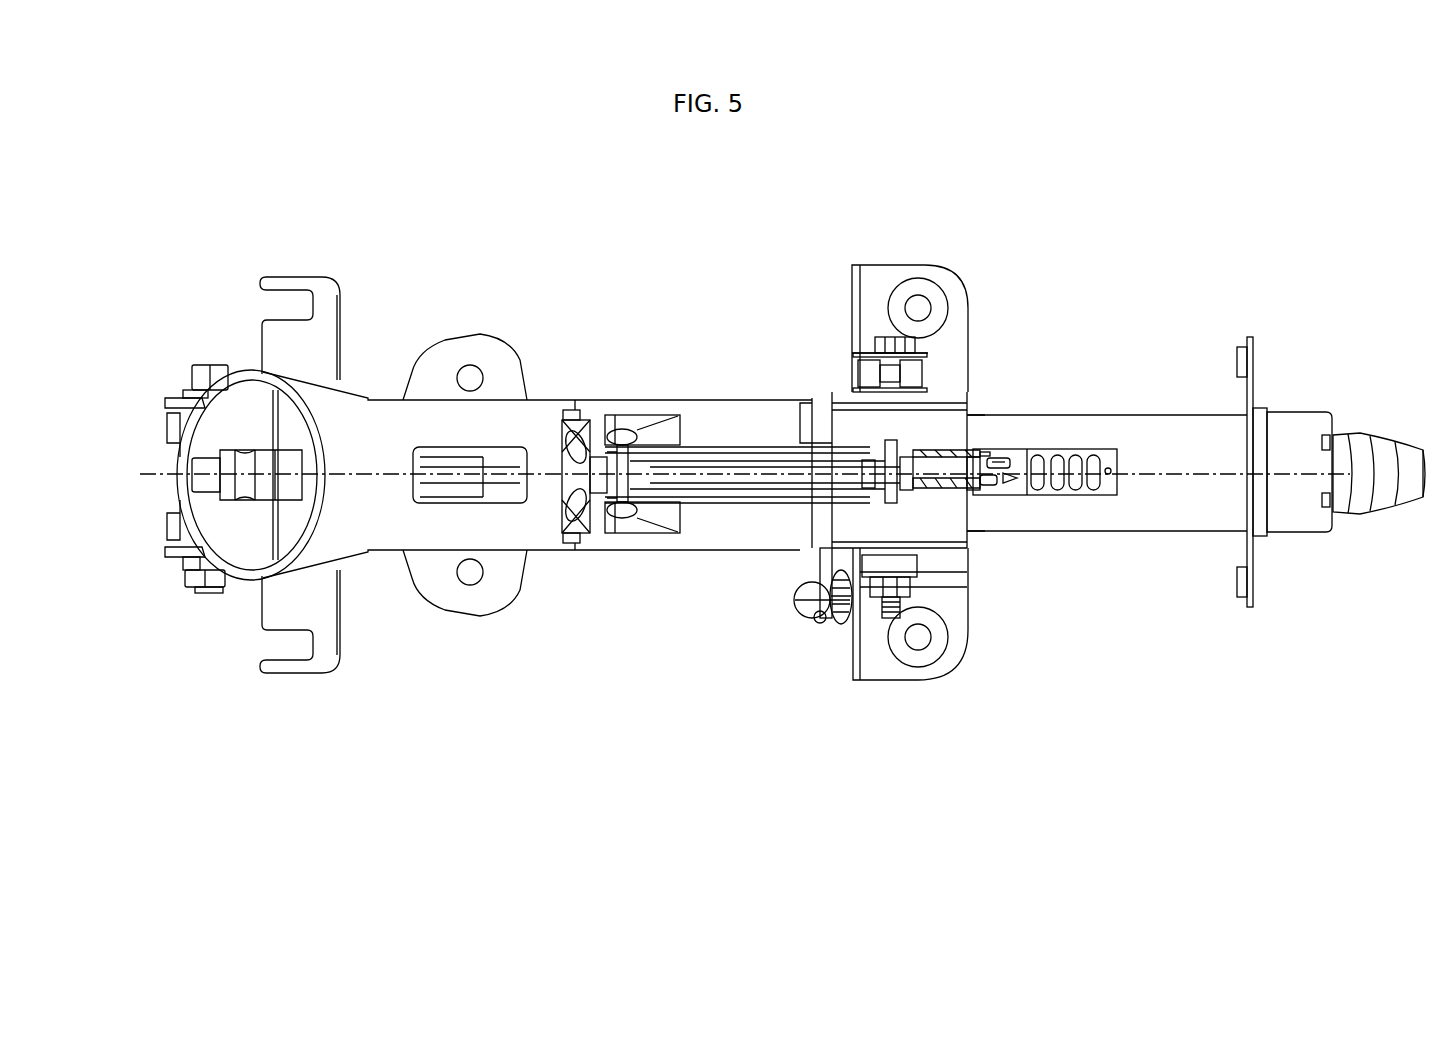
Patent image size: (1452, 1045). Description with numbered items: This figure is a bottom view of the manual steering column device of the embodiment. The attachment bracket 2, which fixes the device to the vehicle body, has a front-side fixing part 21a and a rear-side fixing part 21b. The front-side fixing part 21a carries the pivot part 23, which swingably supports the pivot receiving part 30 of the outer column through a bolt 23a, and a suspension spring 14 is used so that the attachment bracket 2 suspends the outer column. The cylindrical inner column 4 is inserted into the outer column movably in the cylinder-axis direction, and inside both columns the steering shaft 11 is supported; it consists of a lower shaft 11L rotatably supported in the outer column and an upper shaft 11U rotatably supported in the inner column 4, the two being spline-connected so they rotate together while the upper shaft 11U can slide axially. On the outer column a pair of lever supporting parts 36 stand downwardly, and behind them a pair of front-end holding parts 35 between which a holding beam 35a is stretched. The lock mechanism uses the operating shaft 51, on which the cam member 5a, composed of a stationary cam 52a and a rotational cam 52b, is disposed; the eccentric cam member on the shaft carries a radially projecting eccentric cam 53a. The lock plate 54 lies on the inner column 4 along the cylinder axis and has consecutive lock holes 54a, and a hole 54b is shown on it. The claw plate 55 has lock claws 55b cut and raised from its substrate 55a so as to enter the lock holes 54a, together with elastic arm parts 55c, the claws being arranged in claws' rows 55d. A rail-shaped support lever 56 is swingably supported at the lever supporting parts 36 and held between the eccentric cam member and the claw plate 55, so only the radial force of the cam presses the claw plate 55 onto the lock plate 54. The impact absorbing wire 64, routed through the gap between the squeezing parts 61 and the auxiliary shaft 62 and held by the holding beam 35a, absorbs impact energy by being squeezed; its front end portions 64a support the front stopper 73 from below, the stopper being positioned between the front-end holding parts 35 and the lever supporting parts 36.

The attachment bracket 2 is at (624, 474).
The inner column 4 is at (1163, 412).
The cam member 5a is at (813, 338).
The steering shaft 11 is at (762, 442).
The lower shaft 11L is at (200, 472).
The upper shaft 11U is at (1393, 447).
The suspension spring 14 is at (806, 617).
The front-side fixing part 21a is at (283, 282).
The rear-side fixing part 21b is at (900, 270).
The pivot part 23 is at (170, 397).
The bolt 23a is at (207, 588).
The pivot receiving part 30 is at (166, 530).
The front-end holding parts 35 is at (630, 480).
The holding beam 35a is at (621, 463).
The lever supporting parts 36 is at (562, 512).
The operating shaft 51 is at (878, 620).
The stationary cam 52a is at (856, 388).
The rotational cam 52b is at (858, 362).
The eccentric cam 53a is at (915, 487).
The lock plate 54 is at (1083, 468).
The lock holes 54a is at (1093, 457).
The pin hole 54b is at (1067, 483).
The claw plate 55 is at (1050, 477).
The substrate 55a is at (1017, 457).
The lock claws 55b is at (997, 457).
The elastic arm parts 55c is at (984, 451).
The claws' row 55d is at (1008, 482).
The support lever 56 is at (947, 485).
The squeezing parts 61 is at (836, 620).
The auxiliary shaft 62 is at (903, 480).
The impact absorbing wire 64 is at (730, 455).
The front end portions 64a is at (562, 432).
The front stopper 73 is at (597, 508).